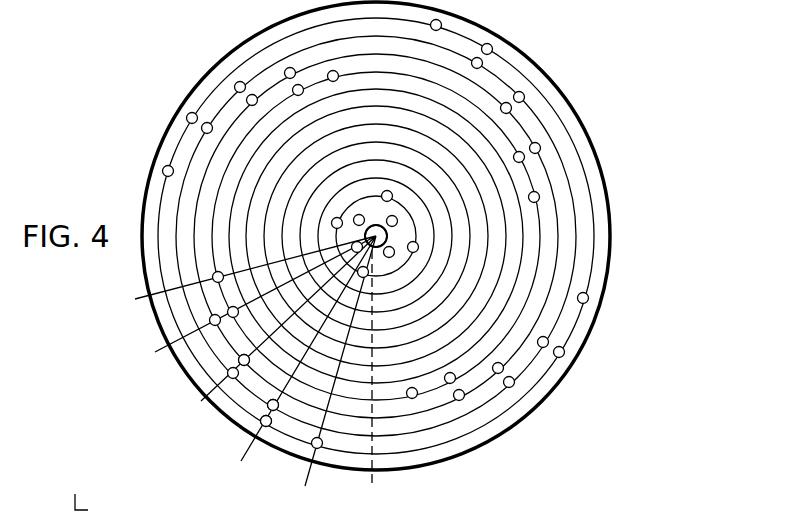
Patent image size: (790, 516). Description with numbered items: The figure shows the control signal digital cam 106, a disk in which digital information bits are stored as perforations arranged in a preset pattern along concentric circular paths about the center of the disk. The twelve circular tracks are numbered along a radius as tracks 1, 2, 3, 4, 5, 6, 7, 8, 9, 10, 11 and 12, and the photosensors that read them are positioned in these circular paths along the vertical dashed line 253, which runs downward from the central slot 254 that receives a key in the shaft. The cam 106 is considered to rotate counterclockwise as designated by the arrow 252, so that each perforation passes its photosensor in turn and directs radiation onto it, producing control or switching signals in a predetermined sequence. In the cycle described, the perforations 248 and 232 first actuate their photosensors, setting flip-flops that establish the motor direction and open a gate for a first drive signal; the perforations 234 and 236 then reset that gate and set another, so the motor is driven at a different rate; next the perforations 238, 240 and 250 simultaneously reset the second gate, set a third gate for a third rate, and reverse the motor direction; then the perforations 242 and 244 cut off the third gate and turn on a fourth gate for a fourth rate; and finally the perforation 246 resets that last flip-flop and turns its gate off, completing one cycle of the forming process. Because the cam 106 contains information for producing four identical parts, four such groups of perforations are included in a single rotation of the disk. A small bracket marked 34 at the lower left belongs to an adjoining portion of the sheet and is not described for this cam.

The control signal digital cam 106 is at (613, 236).
The arrow 252 is at (223, 22).
The slot 254 is at (364, 242).
The perforation 246 is at (231, 254).
The perforation 242 is at (203, 350).
The perforation 244 is at (239, 359).
The perforation 240 is at (222, 397).
The perforation 238 is at (268, 406).
The perforation 234 is at (262, 423).
The perforation 236 is at (266, 417).
The perforation 232 is at (314, 449).
The perforation 250 is at (355, 250).
The perforation 248 is at (361, 278).
The dashed line 253 is at (378, 492).
The element 34 is at (92, 505).
The track 1 is at (376, 240).
The track 2 is at (376, 240).
The track 3 is at (376, 240).
The track 4 is at (376, 240).
The track 5 is at (376, 240).
The track 6 is at (376, 240).
The track 7 is at (376, 240).
The track 8 is at (376, 240).
The track 9 is at (376, 240).
The track 10 is at (376, 240).
The track 11 is at (376, 240).
The track 12 is at (376, 240).